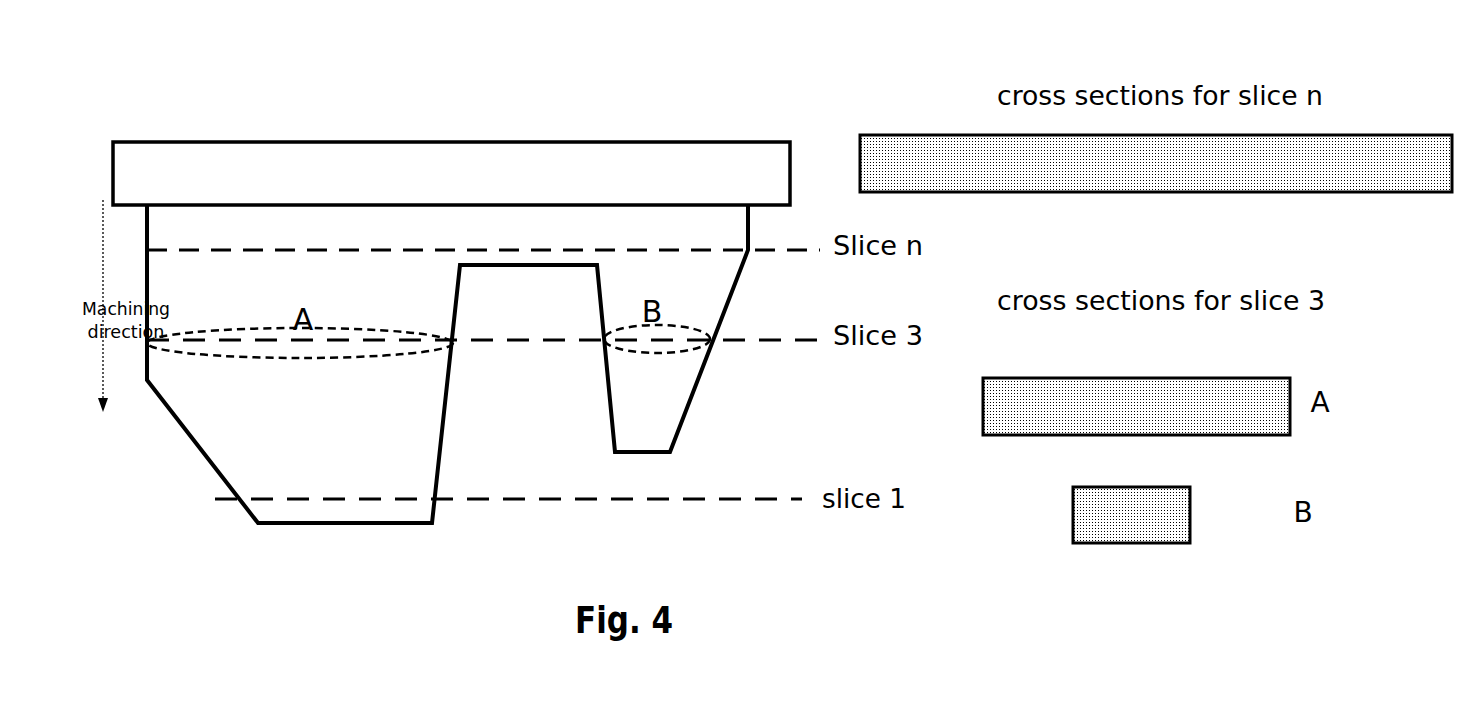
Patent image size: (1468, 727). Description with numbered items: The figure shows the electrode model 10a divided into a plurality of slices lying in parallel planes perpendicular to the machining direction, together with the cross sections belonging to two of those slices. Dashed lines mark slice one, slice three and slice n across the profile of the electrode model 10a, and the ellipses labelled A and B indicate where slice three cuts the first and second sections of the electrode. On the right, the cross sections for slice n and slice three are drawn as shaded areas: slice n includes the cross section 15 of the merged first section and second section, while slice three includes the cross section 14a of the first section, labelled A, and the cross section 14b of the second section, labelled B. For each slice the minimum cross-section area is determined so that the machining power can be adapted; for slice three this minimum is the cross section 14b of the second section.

The electrode model 10a is at (258, 133).
The cross section of the merged first section and second section 15 is at (1328, 202).
The cross section of the first section 14a is at (1298, 390).
The cross section of the second section 14b is at (1275, 500).